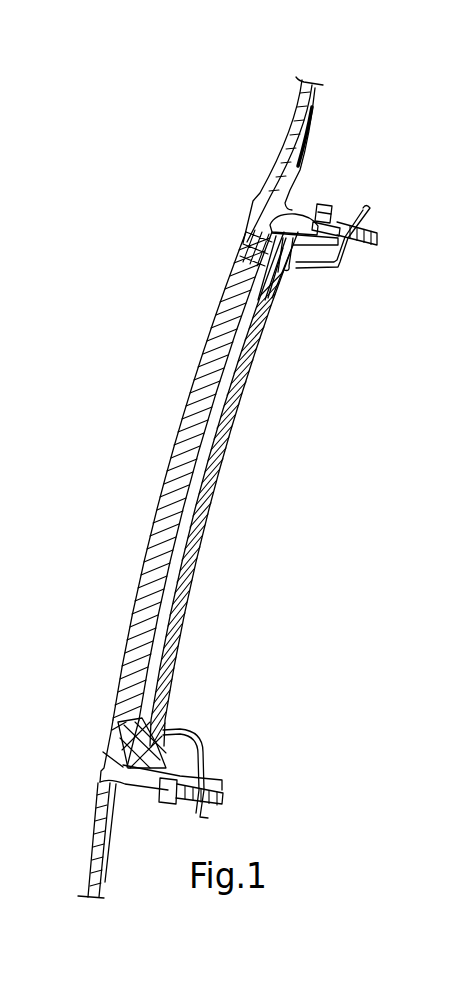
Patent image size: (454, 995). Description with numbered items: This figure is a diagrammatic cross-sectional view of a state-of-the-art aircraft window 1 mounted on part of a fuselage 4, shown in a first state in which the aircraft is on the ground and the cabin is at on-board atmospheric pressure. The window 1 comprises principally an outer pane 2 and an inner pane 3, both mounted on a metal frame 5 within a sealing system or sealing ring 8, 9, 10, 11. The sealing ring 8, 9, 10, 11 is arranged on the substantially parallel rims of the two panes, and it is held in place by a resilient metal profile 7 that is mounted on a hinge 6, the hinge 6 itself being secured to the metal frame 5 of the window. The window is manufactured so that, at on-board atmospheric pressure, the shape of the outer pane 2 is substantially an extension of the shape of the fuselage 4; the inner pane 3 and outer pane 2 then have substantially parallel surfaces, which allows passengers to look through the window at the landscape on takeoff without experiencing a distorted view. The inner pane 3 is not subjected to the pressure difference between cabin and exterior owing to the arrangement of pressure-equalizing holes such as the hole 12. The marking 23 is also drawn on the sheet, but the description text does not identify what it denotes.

The window 1 is at (103, 409).
The outer pane 2 is at (157, 578).
The inner pane 3 is at (190, 590).
The fuselage 4 is at (287, 133).
The metal frame 5 is at (302, 168).
The hinge 6 is at (370, 233).
The resilient metal profile 7 is at (337, 271).
The sealing ring 8 is at (289, 249).
The sealing ring 9 is at (263, 287).
The sealing ring 10 is at (256, 268).
The sealing ring 11 is at (240, 249).
The pressure-equalizing hole 12 is at (275, 292).
The hollow chamber 23 is at (121, 710).